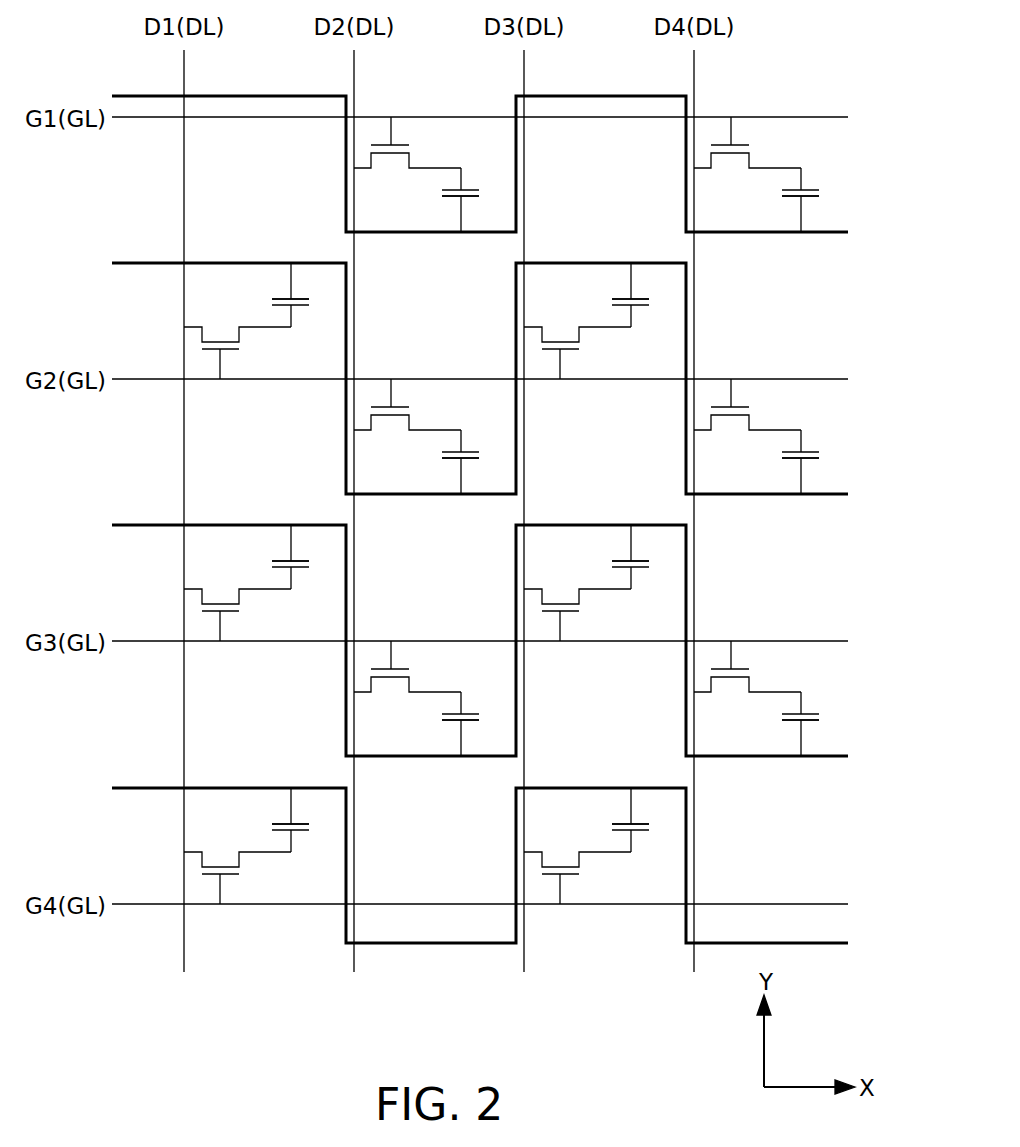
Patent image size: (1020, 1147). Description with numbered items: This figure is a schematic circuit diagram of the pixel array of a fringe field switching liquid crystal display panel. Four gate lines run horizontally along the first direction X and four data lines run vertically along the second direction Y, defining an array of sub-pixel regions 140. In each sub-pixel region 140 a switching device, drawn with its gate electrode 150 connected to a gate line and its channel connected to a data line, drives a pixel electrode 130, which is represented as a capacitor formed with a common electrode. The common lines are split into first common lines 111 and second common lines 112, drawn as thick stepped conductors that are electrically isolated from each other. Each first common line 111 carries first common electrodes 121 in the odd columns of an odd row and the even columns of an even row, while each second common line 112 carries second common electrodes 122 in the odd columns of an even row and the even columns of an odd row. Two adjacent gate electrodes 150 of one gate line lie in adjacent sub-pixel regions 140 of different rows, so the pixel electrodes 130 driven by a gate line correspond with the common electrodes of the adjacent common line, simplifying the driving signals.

The first common line 111 is at (130, 262).
The second common line 112 is at (130, 95).
The first common electrode 121 is at (450, 460).
The second common electrode 122 is at (450, 198).
The pixel electrode 130 is at (470, 189).
The sub-pixel region 140 is at (285, 173).
The gate electrode 150 is at (409, 146).